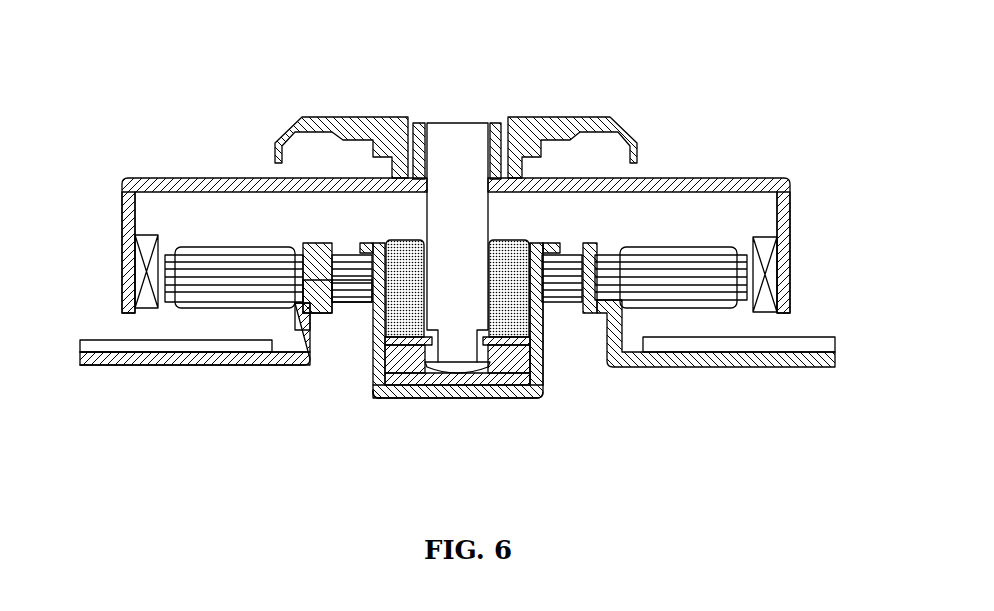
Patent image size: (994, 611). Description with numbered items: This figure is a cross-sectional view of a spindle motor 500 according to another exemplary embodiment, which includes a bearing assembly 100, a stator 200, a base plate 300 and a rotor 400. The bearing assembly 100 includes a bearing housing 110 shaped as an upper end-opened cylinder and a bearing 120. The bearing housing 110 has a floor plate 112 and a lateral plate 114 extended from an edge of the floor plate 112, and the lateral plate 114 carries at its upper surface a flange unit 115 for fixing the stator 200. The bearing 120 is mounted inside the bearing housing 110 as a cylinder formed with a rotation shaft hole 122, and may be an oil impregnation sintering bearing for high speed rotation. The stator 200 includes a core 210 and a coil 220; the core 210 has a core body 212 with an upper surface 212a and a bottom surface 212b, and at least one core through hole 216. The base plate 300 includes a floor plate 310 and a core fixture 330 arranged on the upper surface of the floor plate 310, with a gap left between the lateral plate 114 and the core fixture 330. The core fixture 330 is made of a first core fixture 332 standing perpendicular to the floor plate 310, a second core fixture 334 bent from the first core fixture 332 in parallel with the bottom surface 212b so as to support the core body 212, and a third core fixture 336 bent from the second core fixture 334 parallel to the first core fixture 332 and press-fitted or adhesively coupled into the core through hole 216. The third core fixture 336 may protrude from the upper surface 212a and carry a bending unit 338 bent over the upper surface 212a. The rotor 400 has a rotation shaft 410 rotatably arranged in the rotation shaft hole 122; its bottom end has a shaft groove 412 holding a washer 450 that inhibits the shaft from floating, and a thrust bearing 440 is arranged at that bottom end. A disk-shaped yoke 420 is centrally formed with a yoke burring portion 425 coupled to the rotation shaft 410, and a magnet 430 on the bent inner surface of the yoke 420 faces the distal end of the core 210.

The bearing assembly 100 is at (366, 399).
The bearing housing 110 is at (483, 332).
The floor plate 112 is at (512, 399).
The lateral plate 114 is at (544, 345).
The flange unit 115 is at (549, 241).
The bearing 120 is at (513, 242).
The rotation shaft hole 122 is at (413, 243).
The stator 200 is at (511, 308).
The core 210 is at (749, 288).
The core body 212 is at (616, 341).
The upper surface 212a is at (348, 253).
The bottom surface 212b is at (357, 303).
The core through hole 216 is at (600, 278).
The coil 220 is at (713, 248).
The base plate 300 is at (226, 336).
The floor plate 310 is at (115, 367).
The core fixture 330 is at (208, 364).
The first core fixture 332 is at (300, 332).
The second core fixture 334 is at (312, 316).
The third core fixture 336 is at (327, 306).
The bending unit 338 is at (306, 243).
The rotor 400 is at (483, 214).
The rotation shaft 410 is at (451, 131).
The shaft groove 412 is at (450, 352).
The yoke 420 is at (788, 210).
The yoke burring portion 425 is at (500, 127).
The magnet 430 is at (767, 257).
The thrust bearing 440 is at (478, 376).
The washer 450 is at (418, 343).
The spindle motor 500 is at (477, 98).